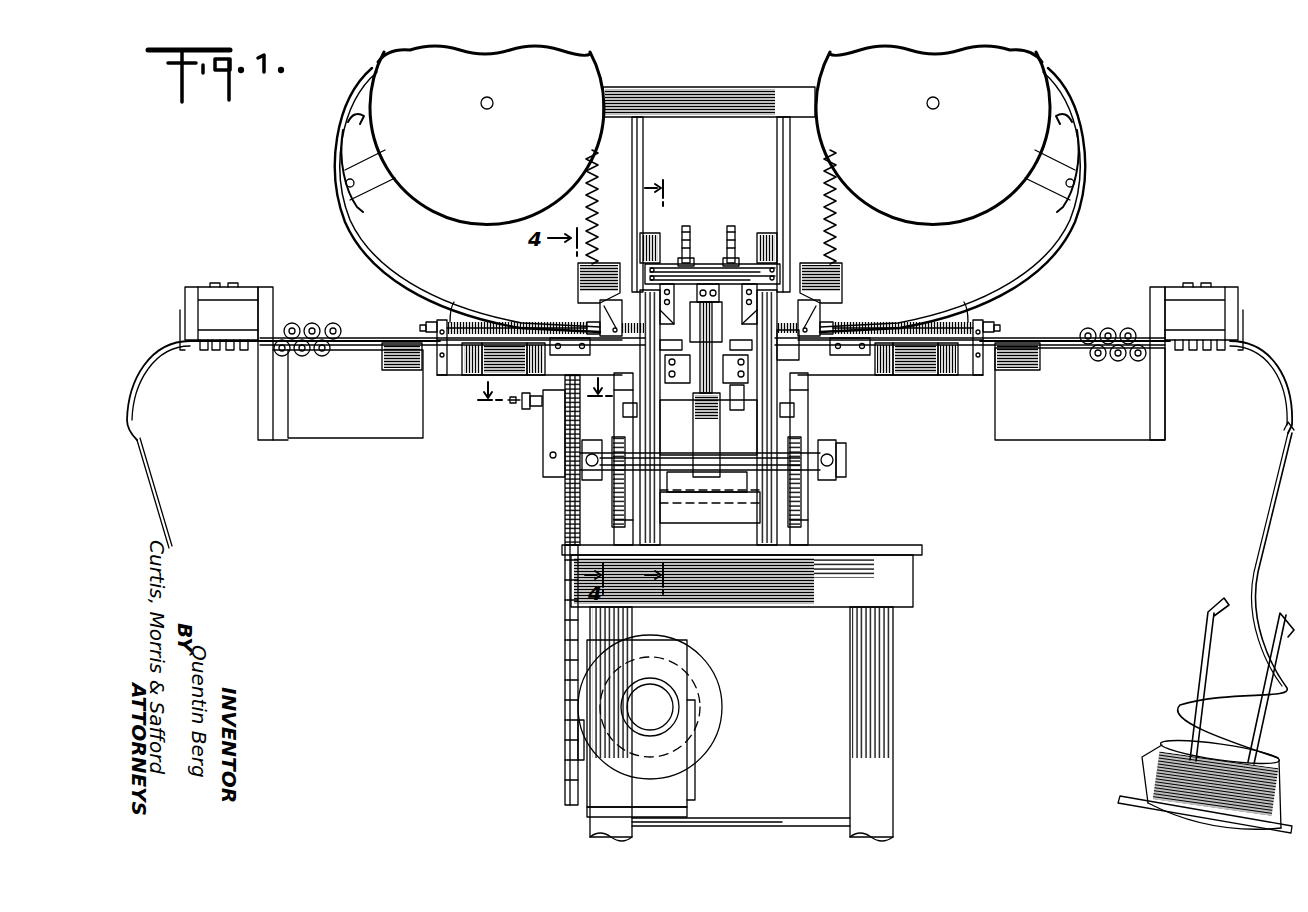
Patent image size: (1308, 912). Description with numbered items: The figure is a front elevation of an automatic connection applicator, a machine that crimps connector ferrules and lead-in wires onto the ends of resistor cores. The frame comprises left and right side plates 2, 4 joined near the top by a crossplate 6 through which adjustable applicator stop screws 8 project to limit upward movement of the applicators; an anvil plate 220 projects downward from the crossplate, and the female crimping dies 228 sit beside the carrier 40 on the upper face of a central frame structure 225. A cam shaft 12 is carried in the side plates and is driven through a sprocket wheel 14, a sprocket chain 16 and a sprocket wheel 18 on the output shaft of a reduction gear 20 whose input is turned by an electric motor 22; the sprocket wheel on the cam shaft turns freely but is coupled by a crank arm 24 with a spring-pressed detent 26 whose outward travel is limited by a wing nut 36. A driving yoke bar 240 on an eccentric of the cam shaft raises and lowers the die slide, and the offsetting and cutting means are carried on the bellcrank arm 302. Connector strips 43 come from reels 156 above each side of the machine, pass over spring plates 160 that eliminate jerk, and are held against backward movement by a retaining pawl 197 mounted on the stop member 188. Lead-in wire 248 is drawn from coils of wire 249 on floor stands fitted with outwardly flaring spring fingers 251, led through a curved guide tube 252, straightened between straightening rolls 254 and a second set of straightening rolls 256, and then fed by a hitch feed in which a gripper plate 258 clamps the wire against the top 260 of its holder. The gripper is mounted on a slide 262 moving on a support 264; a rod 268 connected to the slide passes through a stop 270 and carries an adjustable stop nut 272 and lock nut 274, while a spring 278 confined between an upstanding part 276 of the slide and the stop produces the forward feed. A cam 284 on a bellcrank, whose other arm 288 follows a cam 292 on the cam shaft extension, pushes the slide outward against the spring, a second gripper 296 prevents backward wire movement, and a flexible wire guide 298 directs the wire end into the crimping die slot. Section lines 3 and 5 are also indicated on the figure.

The left side plate 2 is at (653, 240).
The section line 3 is at (540, 401).
The right side plate 4 is at (766, 240).
The section line 5 is at (654, 382).
The crossplate 6 is at (693, 284).
The adjustable applicator stop screws 8 is at (727, 230).
The cam shaft 12 is at (838, 457).
The sprocket wheel 14 is at (565, 485).
The sprocket chain 16 is at (565, 626).
The sprocket wheel 18 is at (573, 770).
The reduction gear 20 is at (672, 790).
The electric motor 22 is at (694, 664).
The crank arm 24 is at (550, 440).
The spring-pressed detent 26 is at (526, 410).
The wing nut 36 is at (508, 404).
The carrier 40 is at (687, 272).
The connector strips 43 is at (350, 222).
The reels 156 is at (580, 80).
The spring plates 160 is at (356, 128).
The stop member 188 is at (600, 305).
The retaining pawl 197 is at (602, 317).
The anvil plate 220 is at (708, 272).
The central frame structure 225 is at (697, 415).
The female crimping dies 228 is at (708, 355).
The driving yoke bar 240 is at (706, 514).
The lead-in wire 248 is at (342, 356).
The coils of wire 249 is at (1152, 766).
The spring fingers 251 is at (1215, 603).
The curved guide tube 252 is at (133, 384).
The straightening rolls 254 is at (234, 360).
The second set of straightening rolls 256 is at (302, 318).
The gripper plate 258 is at (531, 369).
The top of the holder 260 is at (540, 328).
The slide 262 is at (793, 366).
The support 264 is at (400, 356).
The rod 268 is at (485, 326).
The stop 270 is at (443, 375).
The adjustable stop nut 272 is at (436, 322).
The lock nut 274 is at (421, 324).
The upstanding part 276 is at (588, 326).
The spring 278 is at (452, 322).
The cam 284 is at (586, 272).
The bellcrank arm 288 is at (830, 432).
The cam 292 is at (620, 484).
The second gripper 296 is at (475, 376).
The flexible wire guide 298 is at (710, 355).
The bellcrank arm 302 is at (730, 378).